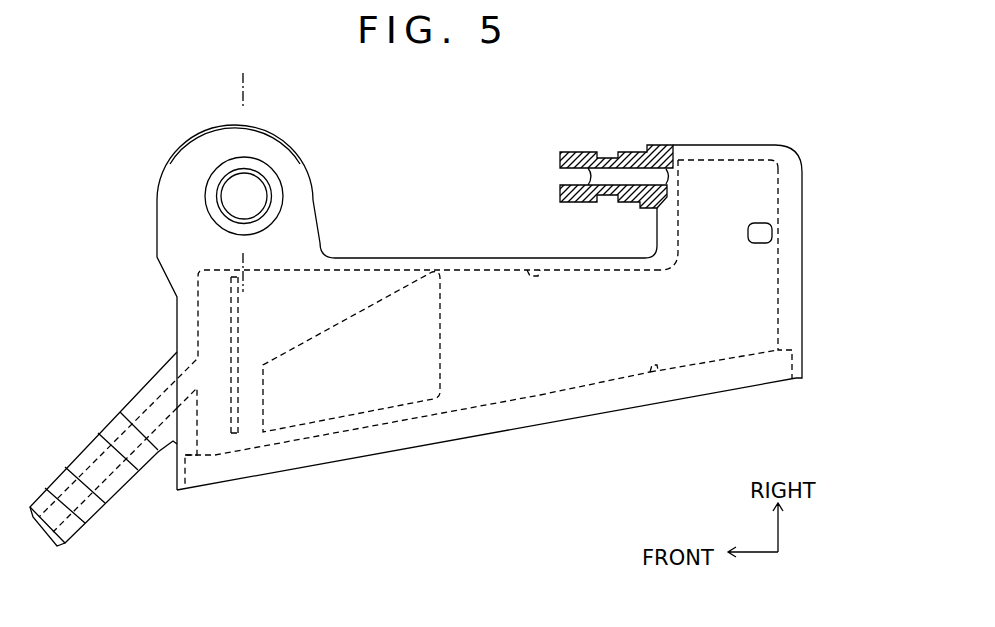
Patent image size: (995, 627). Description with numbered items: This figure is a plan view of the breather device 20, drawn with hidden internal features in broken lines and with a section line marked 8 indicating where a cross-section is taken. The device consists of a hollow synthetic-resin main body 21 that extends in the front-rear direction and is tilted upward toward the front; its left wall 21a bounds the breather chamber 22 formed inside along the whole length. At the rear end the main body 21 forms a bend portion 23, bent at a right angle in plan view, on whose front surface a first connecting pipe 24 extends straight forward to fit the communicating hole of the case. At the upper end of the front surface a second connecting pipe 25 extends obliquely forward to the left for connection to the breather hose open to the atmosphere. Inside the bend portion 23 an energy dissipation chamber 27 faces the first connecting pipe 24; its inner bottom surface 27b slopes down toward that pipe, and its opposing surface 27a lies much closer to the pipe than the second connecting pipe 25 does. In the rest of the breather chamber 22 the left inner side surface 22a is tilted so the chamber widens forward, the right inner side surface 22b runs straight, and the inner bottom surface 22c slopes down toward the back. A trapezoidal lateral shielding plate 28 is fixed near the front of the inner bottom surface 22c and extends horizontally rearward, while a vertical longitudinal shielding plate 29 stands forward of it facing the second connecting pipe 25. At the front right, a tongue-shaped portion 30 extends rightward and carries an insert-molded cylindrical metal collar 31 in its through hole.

The breather device 20 is at (762, 63).
The main body 21 is at (478, 437).
The left wall 21a is at (385, 423).
The breather chamber 22 is at (470, 295).
The left inner side surface 22a is at (658, 370).
The right inner side surface 22b is at (527, 270).
The inner bottom surface 22c is at (573, 375).
The bend portion 23 is at (803, 210).
The first connecting pipe 24 is at (575, 150).
The second connecting pipe 25 is at (85, 444).
The energy dissipation chamber 27 is at (728, 180).
The opposing surface 27a is at (784, 158).
The inner bottom surface 27b is at (702, 190).
The lateral shielding plate 28 is at (370, 304).
The longitudinal shielding plate 29 is at (230, 425).
The tongue-shaped portion 30 is at (290, 140).
The cylindrical metal collar 31 is at (205, 203).
The section line of FIG. 8 is at (243, 73).